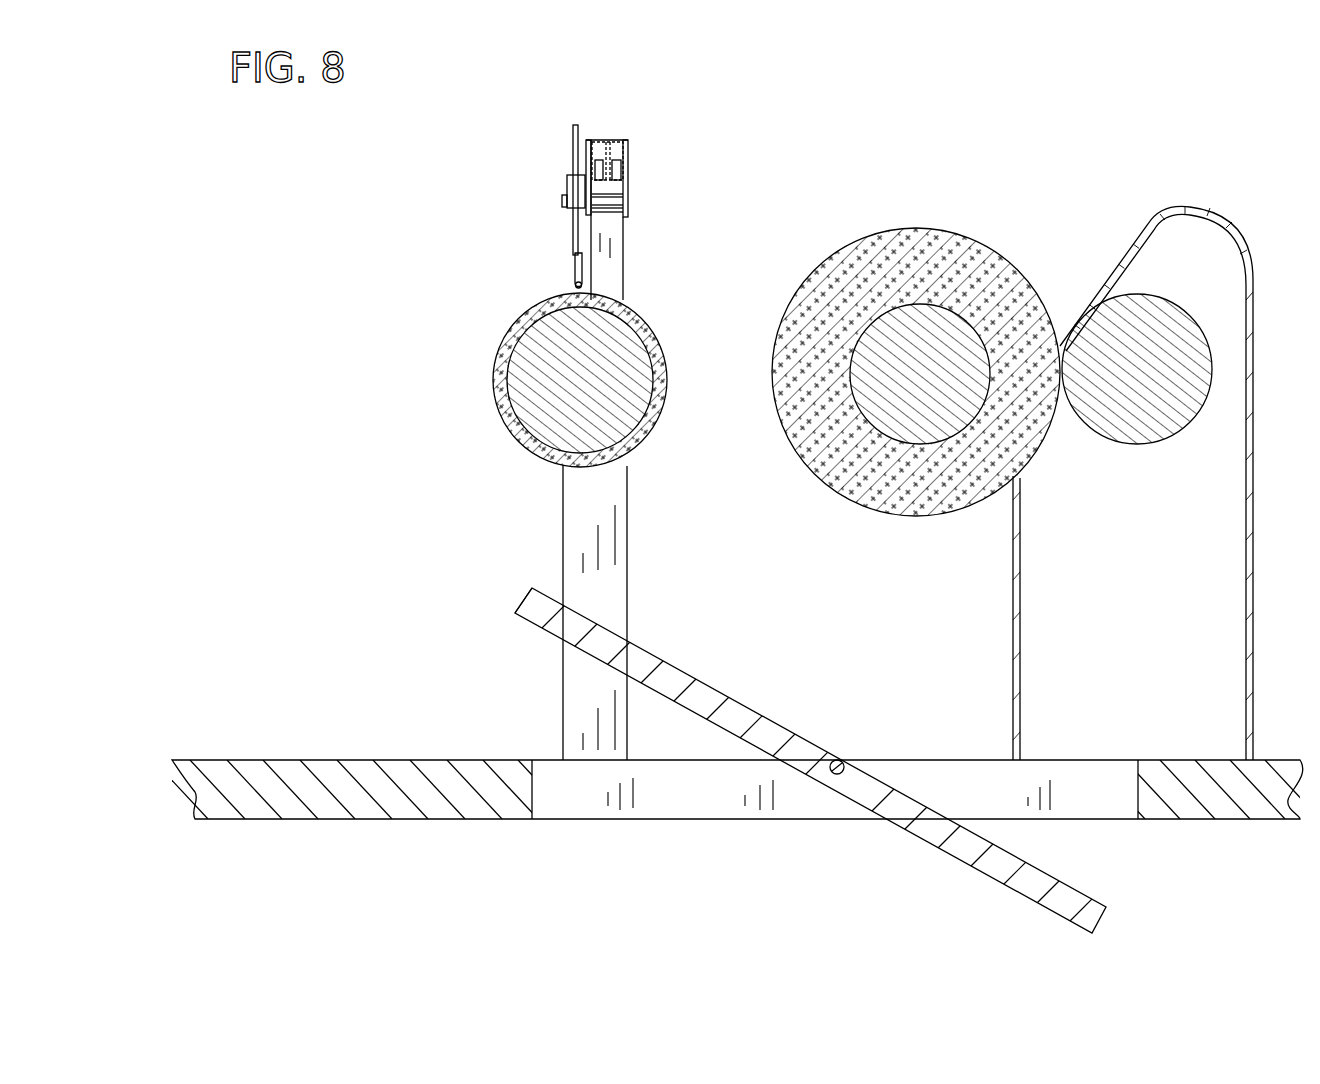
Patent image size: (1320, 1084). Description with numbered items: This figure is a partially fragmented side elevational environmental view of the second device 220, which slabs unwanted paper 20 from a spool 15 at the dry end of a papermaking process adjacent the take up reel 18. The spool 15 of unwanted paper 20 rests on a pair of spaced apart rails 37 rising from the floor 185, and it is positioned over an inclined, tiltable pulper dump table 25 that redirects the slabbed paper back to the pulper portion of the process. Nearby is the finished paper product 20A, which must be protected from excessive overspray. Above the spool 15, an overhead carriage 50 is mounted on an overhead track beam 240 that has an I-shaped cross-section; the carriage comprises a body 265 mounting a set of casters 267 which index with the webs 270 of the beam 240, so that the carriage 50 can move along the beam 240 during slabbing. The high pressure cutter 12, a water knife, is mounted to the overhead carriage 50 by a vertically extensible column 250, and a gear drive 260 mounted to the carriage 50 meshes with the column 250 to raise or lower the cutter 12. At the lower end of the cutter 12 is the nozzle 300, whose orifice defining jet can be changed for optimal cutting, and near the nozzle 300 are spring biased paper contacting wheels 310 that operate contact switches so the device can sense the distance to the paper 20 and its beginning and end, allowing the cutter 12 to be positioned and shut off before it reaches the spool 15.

The high pressure cutter 12 is at (590, 276).
The spool 15 is at (522, 380).
The take up reel 18 is at (1133, 318).
The unwanted paper 20 is at (648, 433).
The finished paper product 20A is at (803, 318).
The tiltable pulper dump table 25 is at (914, 858).
The rails 37 is at (607, 583).
The overhead carriage 50 is at (632, 230).
The floor 185 is at (512, 795).
The second illustrated embodiment 220 is at (635, 138).
The overhead track beam 240 is at (626, 148).
The vertically extensible column 250 is at (582, 124).
The gear drive 260 is at (567, 183).
The body 265 is at (573, 213).
The casters 267 is at (597, 168).
The webs 270 is at (598, 152).
The nozzle 300 is at (575, 257).
The paper contacting wheels 310 is at (575, 284).